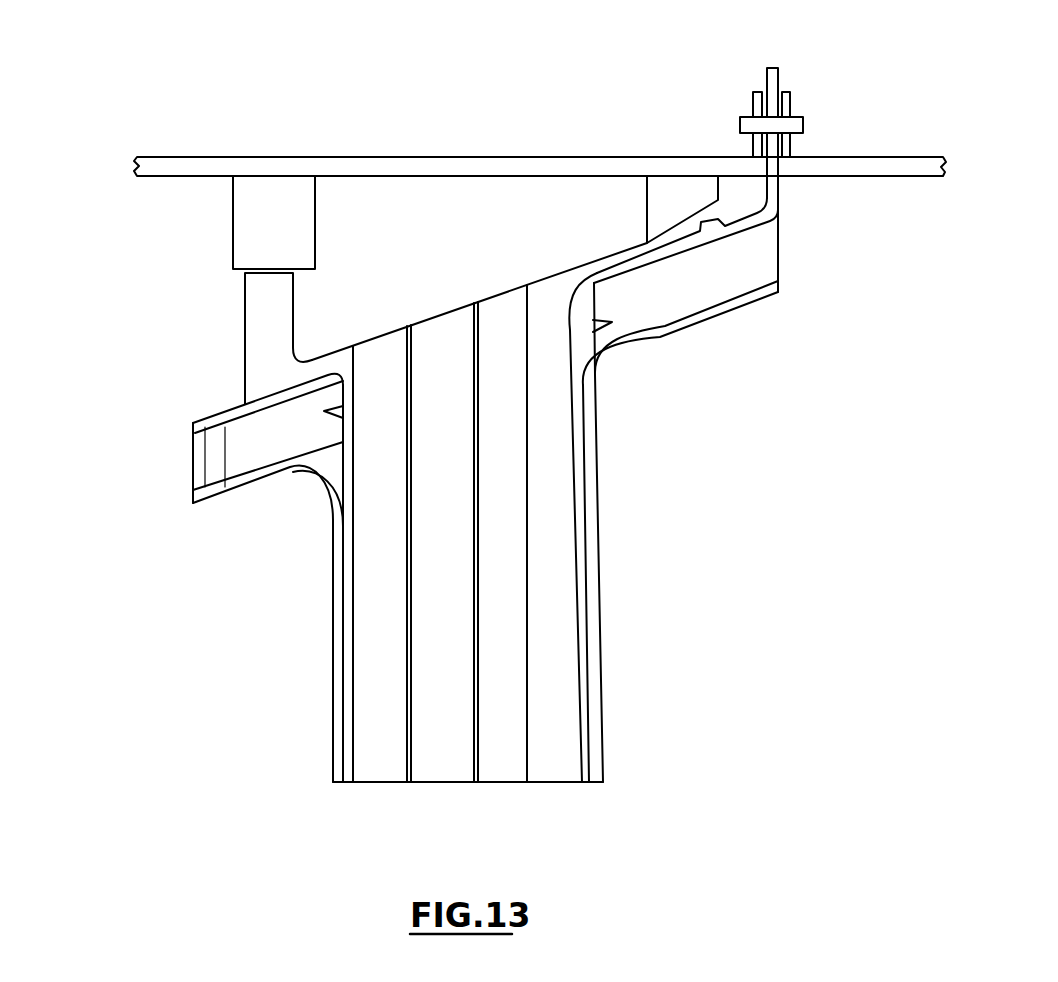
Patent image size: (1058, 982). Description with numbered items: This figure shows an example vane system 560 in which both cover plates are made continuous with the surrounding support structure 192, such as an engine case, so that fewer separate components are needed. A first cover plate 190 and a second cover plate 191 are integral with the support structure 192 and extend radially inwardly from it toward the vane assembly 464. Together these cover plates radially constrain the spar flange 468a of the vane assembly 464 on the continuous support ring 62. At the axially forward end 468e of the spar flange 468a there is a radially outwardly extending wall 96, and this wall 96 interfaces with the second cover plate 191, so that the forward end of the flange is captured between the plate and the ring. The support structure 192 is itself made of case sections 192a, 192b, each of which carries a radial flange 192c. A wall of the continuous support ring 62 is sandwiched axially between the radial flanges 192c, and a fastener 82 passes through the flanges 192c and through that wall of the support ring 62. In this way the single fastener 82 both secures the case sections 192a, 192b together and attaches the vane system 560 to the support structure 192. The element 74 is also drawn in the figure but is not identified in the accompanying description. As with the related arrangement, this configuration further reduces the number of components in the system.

The vane system 560 is at (125, 305).
The support structure 192 is at (484, 156).
The case section 192a is at (572, 156).
The case section 192b is at (880, 156).
The radial flange 192c is at (753, 100).
The pin / hanger 74 is at (780, 67).
The fastener 82 is at (804, 127).
The second cover plate 191 is at (232, 232).
The radially outwardly extending wall 96 is at (262, 327).
The first cover plate 190 is at (645, 214).
The vane assembly 464 is at (668, 537).
The spar flange 468a is at (556, 274).
The axially forward end 468e is at (244, 384).
The continuous support ring 62 is at (678, 255).